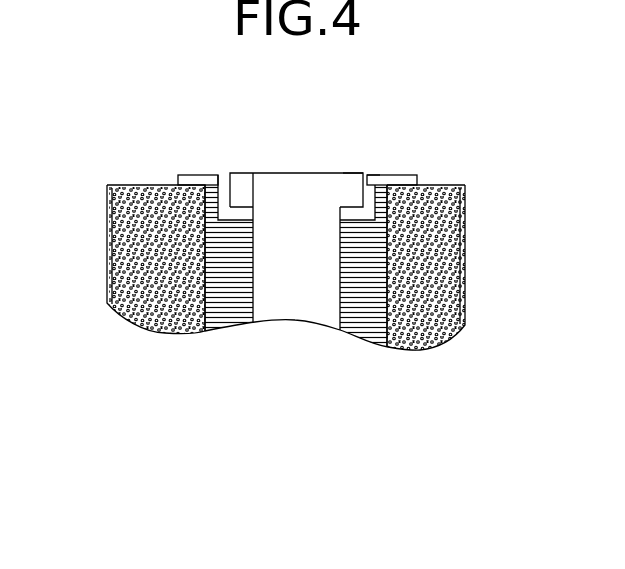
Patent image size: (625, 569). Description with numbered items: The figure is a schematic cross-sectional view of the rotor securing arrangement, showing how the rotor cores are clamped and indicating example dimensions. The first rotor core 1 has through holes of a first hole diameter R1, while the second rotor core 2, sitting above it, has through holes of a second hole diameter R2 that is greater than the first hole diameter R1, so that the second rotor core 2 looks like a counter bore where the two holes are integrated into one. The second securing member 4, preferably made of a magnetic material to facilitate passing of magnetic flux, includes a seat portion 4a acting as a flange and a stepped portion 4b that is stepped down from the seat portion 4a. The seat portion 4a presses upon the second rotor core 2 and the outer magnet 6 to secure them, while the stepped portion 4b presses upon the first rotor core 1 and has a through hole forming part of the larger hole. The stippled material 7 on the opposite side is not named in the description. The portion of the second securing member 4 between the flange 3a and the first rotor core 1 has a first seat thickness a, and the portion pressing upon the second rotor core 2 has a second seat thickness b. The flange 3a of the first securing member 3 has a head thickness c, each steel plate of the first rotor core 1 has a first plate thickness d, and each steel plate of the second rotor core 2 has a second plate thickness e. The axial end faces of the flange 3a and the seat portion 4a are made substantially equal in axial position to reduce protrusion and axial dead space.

The first rotor core 1 is at (102, 218).
The second rotor core 2 is at (102, 183).
The first securing member 3 is at (293, 290).
The flange 3a is at (257, 188).
The second securing member 4 is at (216, 178).
The seat portion 4a is at (192, 176).
The stepped portion 4b is at (374, 191).
The outer magnet 6 is at (148, 183).
The base material (right) 7 is at (448, 186).
The first seat thickness a is at (270, 230).
The second seat thickness b is at (550, 186).
The head thickness c is at (322, 232).
The first plate thickness d is at (540, 237).
The second plate thickness e is at (503, 180).
The first hole diameter R1 is at (253, 323).
The second hole diameter R2 is at (218, 220).